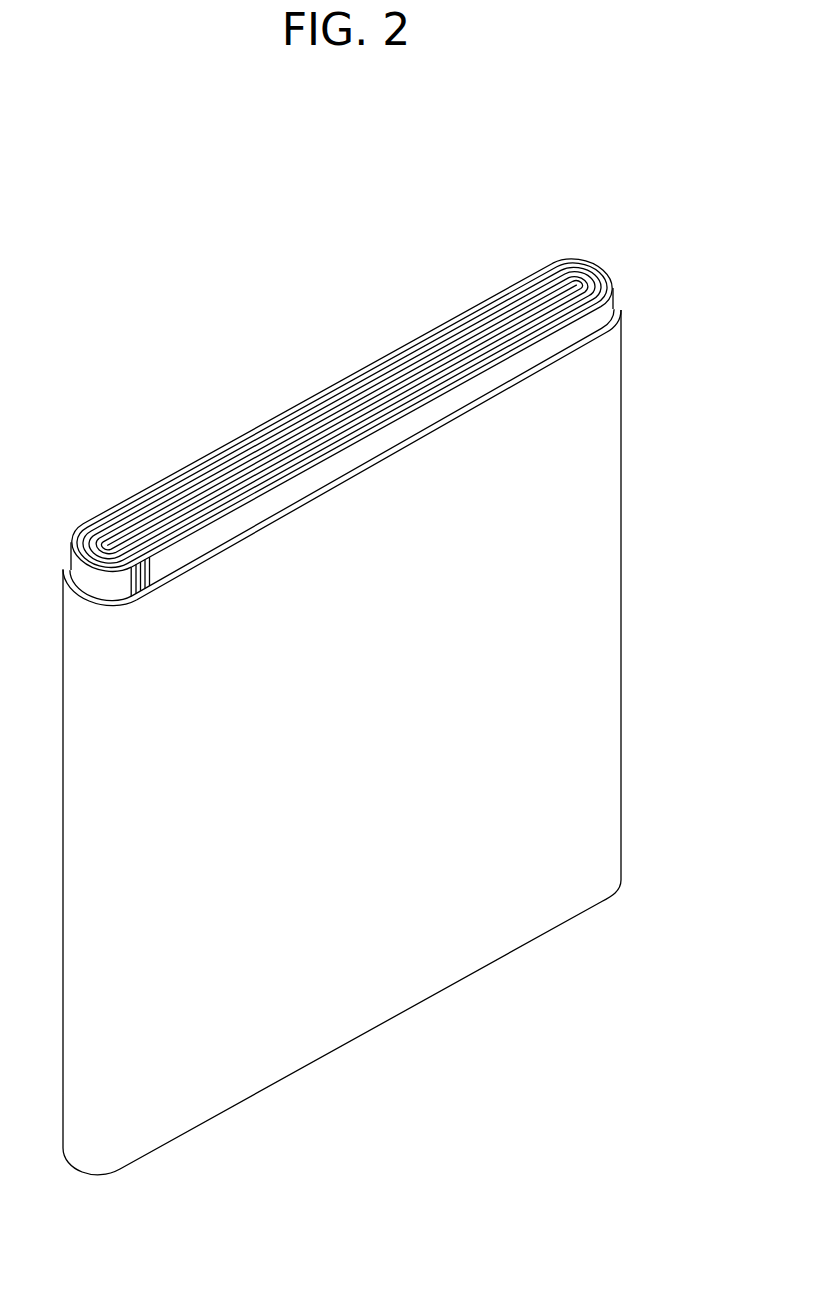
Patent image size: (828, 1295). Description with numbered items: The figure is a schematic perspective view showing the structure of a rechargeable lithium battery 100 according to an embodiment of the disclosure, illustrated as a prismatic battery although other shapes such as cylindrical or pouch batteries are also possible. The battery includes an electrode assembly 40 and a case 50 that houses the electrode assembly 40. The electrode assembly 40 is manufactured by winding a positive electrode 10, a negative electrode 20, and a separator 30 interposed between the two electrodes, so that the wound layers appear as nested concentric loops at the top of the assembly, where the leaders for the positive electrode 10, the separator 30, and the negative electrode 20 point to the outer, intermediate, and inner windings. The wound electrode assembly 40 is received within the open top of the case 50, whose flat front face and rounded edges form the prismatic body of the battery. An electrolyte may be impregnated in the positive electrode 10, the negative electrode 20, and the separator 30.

The rechargeable lithium battery 100 is at (320, 124).
The positive electrode 10 is at (612, 274).
The negative electrode 20 is at (570, 268).
The separator 30 is at (598, 263).
The electrode assembly 40 is at (364, 393).
The case 50 is at (604, 583).